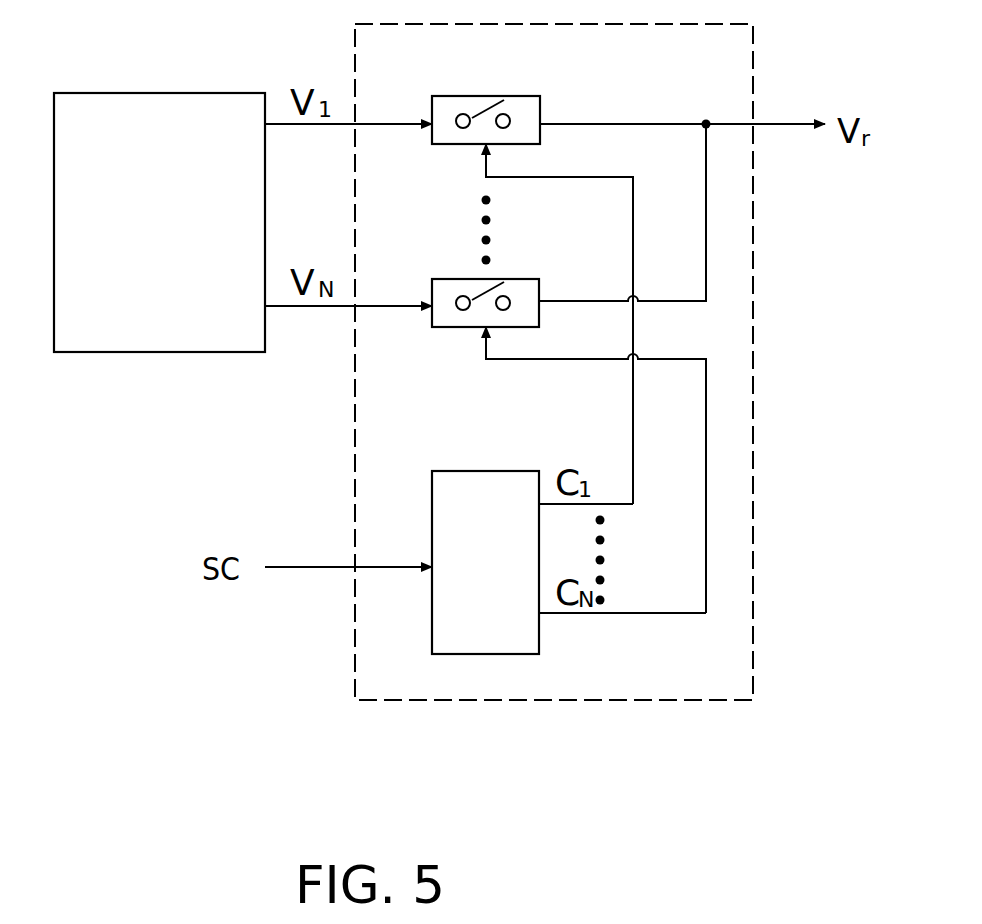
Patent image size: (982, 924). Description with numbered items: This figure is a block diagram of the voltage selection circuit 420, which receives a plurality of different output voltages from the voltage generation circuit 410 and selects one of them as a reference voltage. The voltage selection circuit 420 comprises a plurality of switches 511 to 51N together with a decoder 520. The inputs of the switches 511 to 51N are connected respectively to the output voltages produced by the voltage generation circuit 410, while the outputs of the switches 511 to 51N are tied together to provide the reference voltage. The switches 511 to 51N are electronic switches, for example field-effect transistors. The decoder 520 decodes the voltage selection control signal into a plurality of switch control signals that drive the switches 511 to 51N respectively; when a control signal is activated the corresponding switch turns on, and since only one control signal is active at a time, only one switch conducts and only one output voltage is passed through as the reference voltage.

The voltage generation circuit 410 is at (160, 92).
The voltage selection circuit 420 is at (353, 478).
The switch 511 is at (488, 95).
The switch 51N is at (465, 327).
The decoder 520 is at (483, 657).